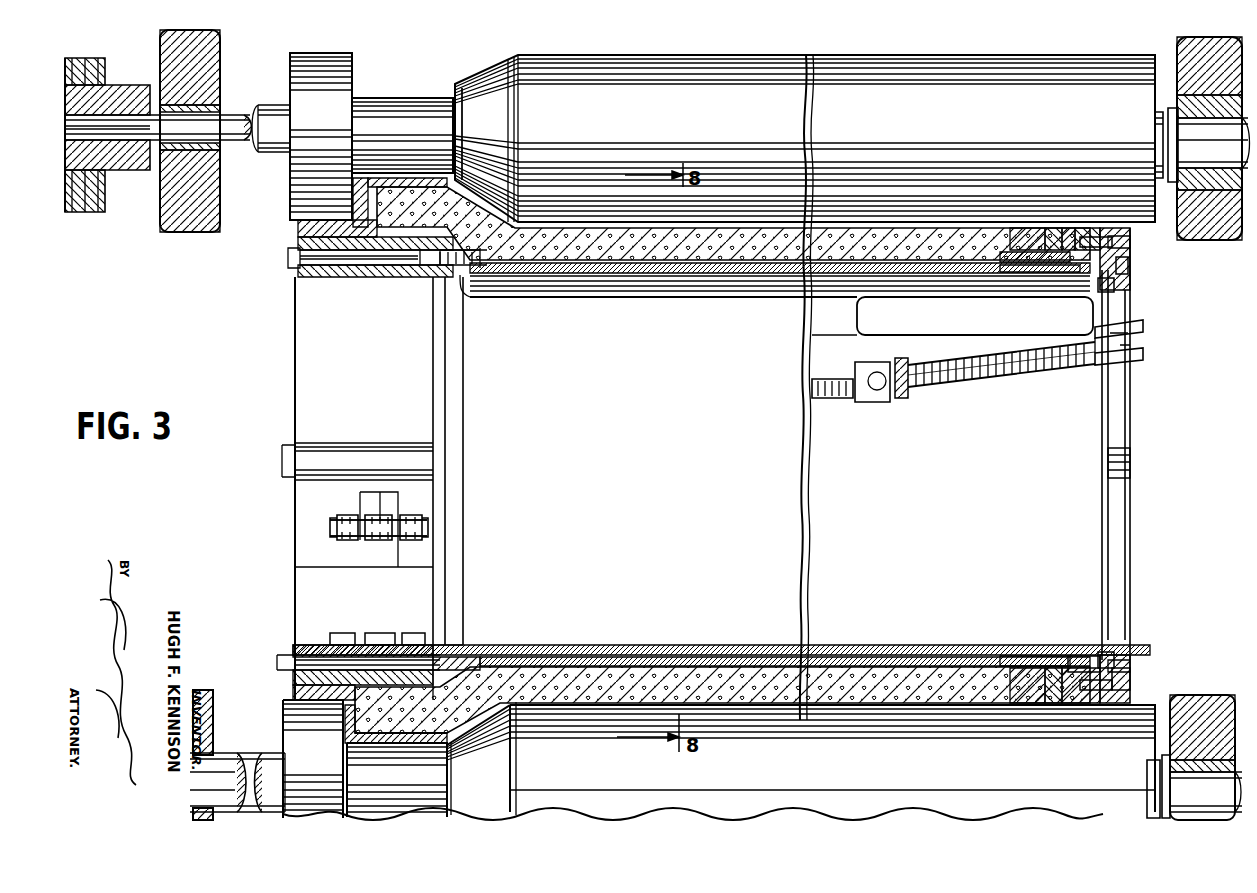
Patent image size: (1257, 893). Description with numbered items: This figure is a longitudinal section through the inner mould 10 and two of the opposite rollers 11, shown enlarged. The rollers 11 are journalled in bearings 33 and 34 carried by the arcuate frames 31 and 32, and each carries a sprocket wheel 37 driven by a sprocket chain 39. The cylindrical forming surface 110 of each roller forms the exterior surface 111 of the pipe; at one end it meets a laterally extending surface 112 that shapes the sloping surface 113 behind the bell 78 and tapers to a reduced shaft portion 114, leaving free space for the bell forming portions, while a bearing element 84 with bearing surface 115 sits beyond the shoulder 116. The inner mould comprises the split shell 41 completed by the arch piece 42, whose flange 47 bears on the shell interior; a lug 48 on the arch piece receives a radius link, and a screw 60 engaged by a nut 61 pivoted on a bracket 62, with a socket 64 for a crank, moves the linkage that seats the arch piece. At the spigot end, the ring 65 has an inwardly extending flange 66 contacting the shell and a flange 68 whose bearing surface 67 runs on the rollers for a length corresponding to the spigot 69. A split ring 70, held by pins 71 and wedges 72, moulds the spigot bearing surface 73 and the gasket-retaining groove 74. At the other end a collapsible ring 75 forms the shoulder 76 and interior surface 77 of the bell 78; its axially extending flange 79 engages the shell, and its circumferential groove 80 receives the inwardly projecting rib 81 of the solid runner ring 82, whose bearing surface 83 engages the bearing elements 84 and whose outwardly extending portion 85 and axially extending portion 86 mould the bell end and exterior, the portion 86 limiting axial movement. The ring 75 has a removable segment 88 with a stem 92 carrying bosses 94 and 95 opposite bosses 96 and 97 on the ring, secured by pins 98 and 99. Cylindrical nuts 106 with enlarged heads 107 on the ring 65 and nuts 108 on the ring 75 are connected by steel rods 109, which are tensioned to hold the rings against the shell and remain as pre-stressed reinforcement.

The inner mould 10 is at (1145, 412).
The rollers 11 is at (684, 82).
The arcuate frame 31 is at (167, 225).
The arcuate frame 32 is at (1210, 227).
The bearings 33 is at (218, 103).
The bearings 34 is at (1166, 106).
The sprocket wheel 37 is at (126, 88).
The sprocket chain 39 is at (68, 213).
The shell 41 is at (1095, 490).
The arch piece 42 is at (695, 297).
The flange 47 is at (598, 295).
The lug 48 is at (772, 304).
The screw 60 is at (967, 368).
The nut 61 is at (870, 400).
The bracket 62 is at (890, 318).
The socket 64 is at (1144, 356).
The ring 65 is at (1104, 228).
The inwardly extending flange 66 is at (1118, 284).
The bearing surface 67 is at (1026, 226).
The flange 68 is at (1090, 228).
The spigot 69 is at (1015, 260).
The split ring 70 is at (1046, 228).
The pins 71 is at (1114, 243).
The wedges 72 is at (1128, 258).
The bearing surface 73 is at (1064, 228).
The gasket-retaining groove 74 is at (1058, 272).
The collapsible ring 75 is at (315, 377).
The shoulder 76 is at (528, 648).
The interior surface 77 is at (450, 660).
The bell 78 is at (412, 715).
The axially extending flange 79 is at (458, 362).
The circumferential groove 80 is at (372, 260).
The inwardly projecting rib 81 is at (298, 246).
The runner ring 82 is at (363, 180).
The bearing surface 83 is at (297, 224).
The bearing element 84 is at (348, 92).
The outwardly extending portion 85 is at (331, 189).
The axially extending portion 86 is at (417, 180).
The removable segment 88 is at (297, 580).
The stem 92 is at (372, 558).
The boss 94 is at (378, 492).
The boss 95 is at (384, 633).
The boss 96 is at (347, 513).
The boss 97 is at (335, 633).
The pin 98 is at (330, 530).
The pin 99 is at (294, 645).
The cylindrical nuts 106 is at (1092, 658).
The enlarged heads 107 is at (1145, 270).
The cylindrical nuts 108 is at (310, 281).
The steel rods 109 is at (530, 286).
The cylindrical forming surface 110 is at (905, 117).
The exterior surface 111 is at (924, 705).
The laterally extending surface 112 is at (488, 76).
The sloping surface 113 is at (484, 185).
The reduced shaft portion 114 is at (408, 112).
The bearing surface 115 is at (314, 58).
The shoulder 116 is at (454, 98).